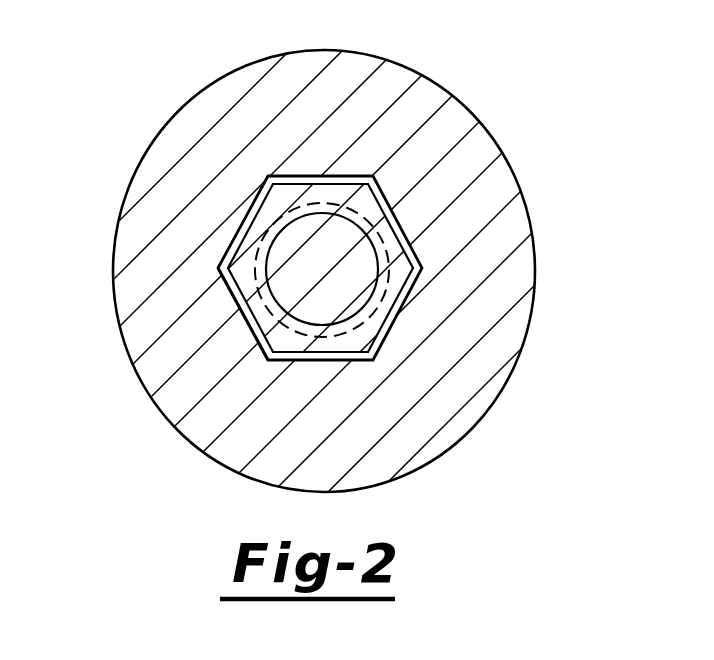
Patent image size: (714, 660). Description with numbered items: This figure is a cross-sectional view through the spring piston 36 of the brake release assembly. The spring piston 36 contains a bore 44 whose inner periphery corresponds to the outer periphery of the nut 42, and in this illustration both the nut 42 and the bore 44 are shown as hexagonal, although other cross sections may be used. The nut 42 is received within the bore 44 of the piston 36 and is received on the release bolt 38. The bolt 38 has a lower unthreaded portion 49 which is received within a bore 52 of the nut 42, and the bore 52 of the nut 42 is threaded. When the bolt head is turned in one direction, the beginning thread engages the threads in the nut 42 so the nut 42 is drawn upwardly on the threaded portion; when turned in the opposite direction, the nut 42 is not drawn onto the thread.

The spring piston 36 is at (135, 230).
The release bolt 38 is at (332, 280).
The nut 42 is at (285, 197).
The bore 44 is at (287, 304).
The lower unthreaded portion 49 is at (373, 237).
The bore 52 is at (266, 340).